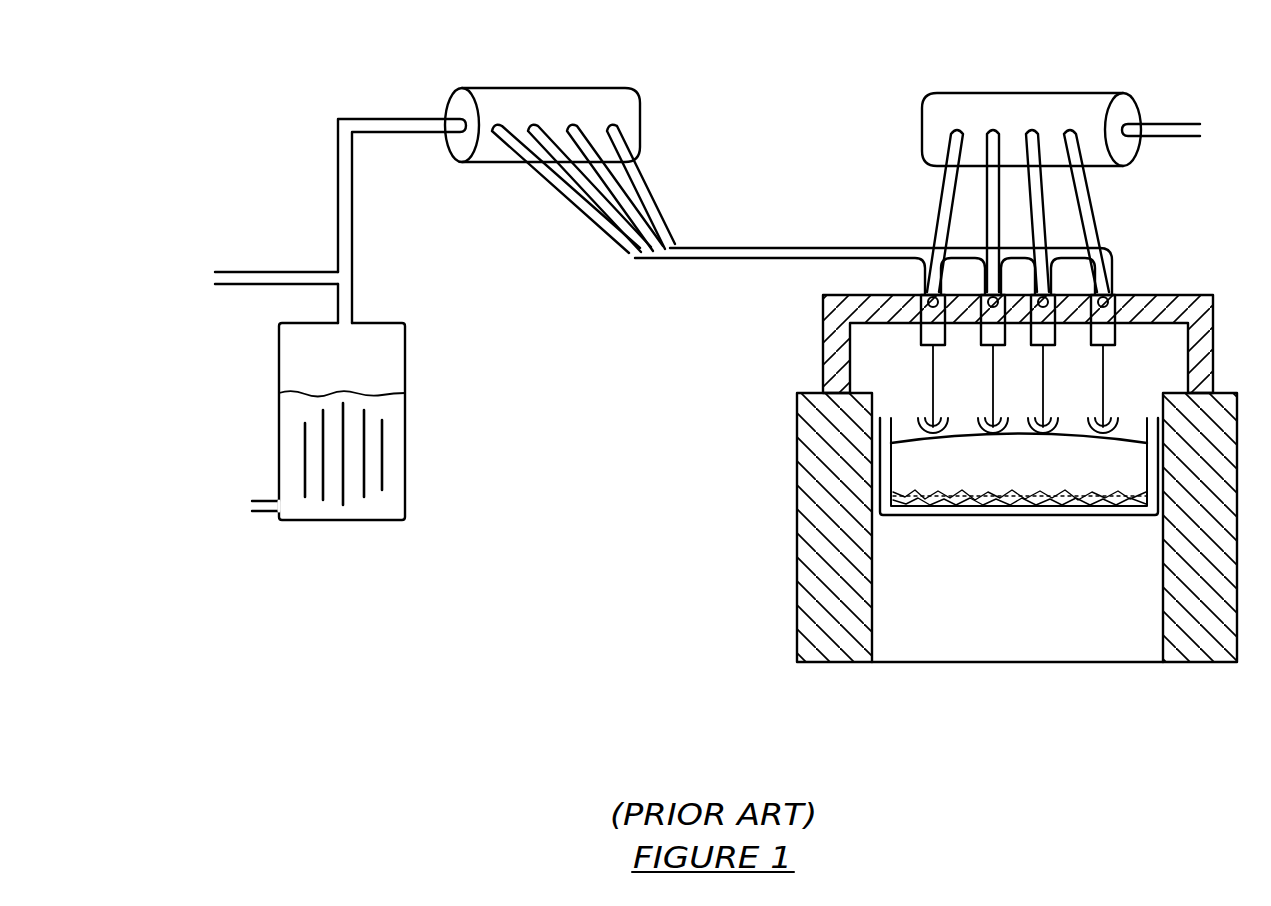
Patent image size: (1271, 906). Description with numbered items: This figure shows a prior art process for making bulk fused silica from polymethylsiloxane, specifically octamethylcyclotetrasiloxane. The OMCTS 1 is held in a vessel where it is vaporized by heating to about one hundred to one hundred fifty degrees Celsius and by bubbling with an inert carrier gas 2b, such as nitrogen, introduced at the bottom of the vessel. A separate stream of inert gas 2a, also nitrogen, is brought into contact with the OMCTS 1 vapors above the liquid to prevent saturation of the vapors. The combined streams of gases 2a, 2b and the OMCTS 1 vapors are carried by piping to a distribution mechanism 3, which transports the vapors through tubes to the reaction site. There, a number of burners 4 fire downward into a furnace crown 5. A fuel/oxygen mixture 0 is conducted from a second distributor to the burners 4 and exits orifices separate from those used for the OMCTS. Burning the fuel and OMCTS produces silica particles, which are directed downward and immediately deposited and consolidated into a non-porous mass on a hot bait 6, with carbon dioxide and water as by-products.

The fuel/oxygen mixture 0 is at (1215, 131).
The OMCTS 1 is at (349, 371).
The stream of inert gas 2a is at (200, 279).
The inert carrier gas 2b is at (238, 505).
The distribution mechanism 3 is at (584, 88).
The burners 4 is at (945, 336).
The furnace crown 5 is at (823, 342).
The hot bait 6 is at (1010, 516).